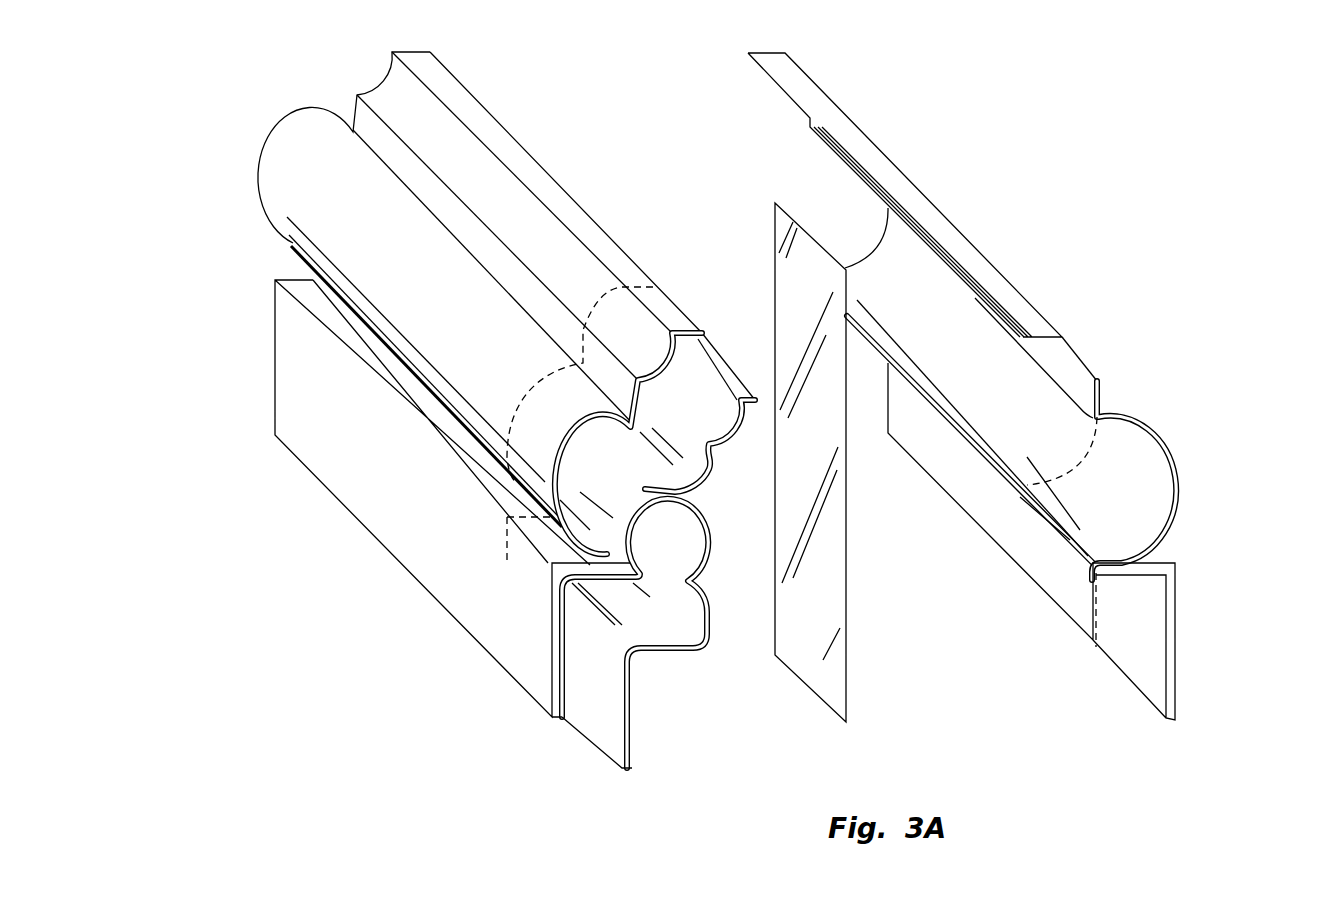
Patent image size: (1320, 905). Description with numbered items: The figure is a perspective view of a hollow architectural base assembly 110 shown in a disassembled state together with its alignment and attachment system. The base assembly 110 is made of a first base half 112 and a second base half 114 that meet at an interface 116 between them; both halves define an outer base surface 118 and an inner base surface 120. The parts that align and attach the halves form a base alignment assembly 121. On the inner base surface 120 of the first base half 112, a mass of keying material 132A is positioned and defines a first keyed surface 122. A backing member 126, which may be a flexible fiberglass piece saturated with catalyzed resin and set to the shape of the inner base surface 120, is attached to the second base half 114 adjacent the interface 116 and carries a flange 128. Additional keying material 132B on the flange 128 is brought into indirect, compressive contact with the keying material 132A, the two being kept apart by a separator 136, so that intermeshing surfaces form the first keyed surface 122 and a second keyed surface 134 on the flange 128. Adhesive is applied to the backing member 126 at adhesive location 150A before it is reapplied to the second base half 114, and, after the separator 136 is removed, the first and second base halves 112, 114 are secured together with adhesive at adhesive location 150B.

The base assembly 110 is at (603, 106).
The first base half 112 is at (932, 212).
The second base half 114 is at (322, 193).
The interface 116 is at (1172, 640).
The outer base surface 118 is at (1158, 332).
The inner base surface 120 is at (895, 245).
The base alignment assembly 121 is at (666, 670).
The first keyed surface 122 is at (1087, 490).
The backing member 126 is at (640, 330).
The flange 128 is at (700, 390).
The keying material 132A is at (1147, 677).
The keying material 132B is at (643, 488).
The second keyed surface 134 is at (594, 501).
The separator 136 is at (787, 280).
The adhesive location 150A is at (523, 633).
The adhesive location 150B is at (1140, 485).